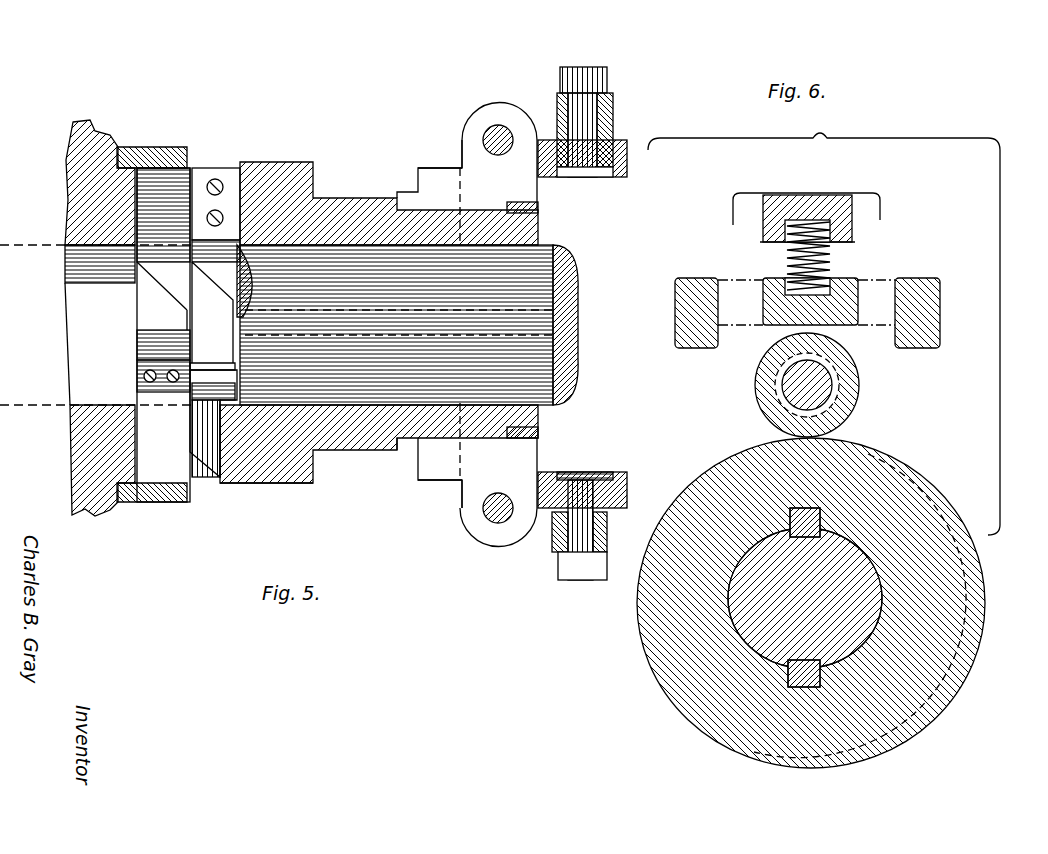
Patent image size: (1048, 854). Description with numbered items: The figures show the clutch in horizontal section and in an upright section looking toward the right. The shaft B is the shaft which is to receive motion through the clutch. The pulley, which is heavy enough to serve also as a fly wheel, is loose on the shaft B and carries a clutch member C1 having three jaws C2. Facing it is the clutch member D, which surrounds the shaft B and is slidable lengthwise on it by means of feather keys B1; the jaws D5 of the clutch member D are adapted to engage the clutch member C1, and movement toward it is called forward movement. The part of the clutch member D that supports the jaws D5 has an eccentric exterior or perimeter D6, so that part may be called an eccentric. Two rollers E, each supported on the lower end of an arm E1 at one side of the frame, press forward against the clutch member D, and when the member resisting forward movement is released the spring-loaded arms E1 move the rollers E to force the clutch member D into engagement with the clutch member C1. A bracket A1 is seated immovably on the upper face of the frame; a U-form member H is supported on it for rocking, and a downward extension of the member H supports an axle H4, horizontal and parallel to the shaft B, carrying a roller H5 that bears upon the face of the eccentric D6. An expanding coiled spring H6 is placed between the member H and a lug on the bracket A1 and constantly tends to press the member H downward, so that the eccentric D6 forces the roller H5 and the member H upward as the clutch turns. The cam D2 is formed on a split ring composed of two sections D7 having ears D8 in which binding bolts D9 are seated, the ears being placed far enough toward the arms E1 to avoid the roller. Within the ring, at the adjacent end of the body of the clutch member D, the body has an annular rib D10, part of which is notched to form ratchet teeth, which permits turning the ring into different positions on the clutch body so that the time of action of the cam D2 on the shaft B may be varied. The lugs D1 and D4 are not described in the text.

In FIG. 5, the clutch member C1 is at (75, 232).
In FIG. 5, the jaws C2 is at (148, 228).
In FIG. 5, the jaws D5 is at (200, 178).
In FIG. 5, the clutch member D is at (379, 306).
In FIG. 6, the clutch member D is at (801, 603).
In FIG. 5, the shaft B is at (367, 253).
In FIG. 6, the shaft B is at (863, 618).
In FIG. 5, the clamping lug D1 is at (410, 178).
In FIG. 5, the lug shoulder D4 is at (437, 167).
In FIG. 5, the ears D8 is at (480, 118).
In FIG. 5, the binding bolts D9 is at (503, 117).
In FIG. 5, the cam D2 is at (440, 470).
In FIG. 5, the sections D7 is at (478, 484).
In FIG. 5, the annular rib D10 is at (545, 440).
In FIG. 5, the perimeter D6 is at (290, 484).
In FIG. 6, the perimeter D6 is at (958, 693).
In FIG. 5, the rollers E is at (632, 145).
In FIG. 5, the arm E1 is at (613, 112).
In FIG. 6, the bracket A1 is at (873, 209).
In FIG. 6, the U-form member H is at (840, 194).
In FIG. 6, the expanding coiled spring H6 is at (828, 267).
In FIG. 6, the roller H5 is at (853, 375).
In FIG. 6, the axle H4 is at (835, 398).
In FIG. 6, the feather keys B1 is at (823, 520).